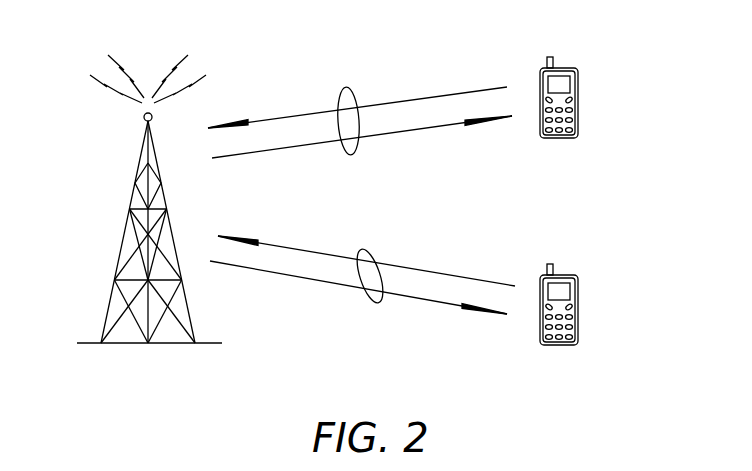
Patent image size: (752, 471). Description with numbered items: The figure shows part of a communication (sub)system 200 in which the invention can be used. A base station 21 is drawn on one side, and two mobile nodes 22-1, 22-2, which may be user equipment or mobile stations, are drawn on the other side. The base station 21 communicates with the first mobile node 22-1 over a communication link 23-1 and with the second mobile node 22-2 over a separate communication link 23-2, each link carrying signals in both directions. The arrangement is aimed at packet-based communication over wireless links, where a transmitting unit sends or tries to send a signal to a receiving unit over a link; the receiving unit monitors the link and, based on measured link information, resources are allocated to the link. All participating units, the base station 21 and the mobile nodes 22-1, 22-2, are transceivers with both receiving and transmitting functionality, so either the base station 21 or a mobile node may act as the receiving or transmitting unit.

The communication (sub)system 200 is at (273, 36).
The base station 21 is at (115, 280).
The mobile node 22-1 is at (578, 102).
The mobile node 22-2 is at (578, 315).
The communication link 23-1 is at (350, 92).
The communication link 23-2 is at (381, 253).